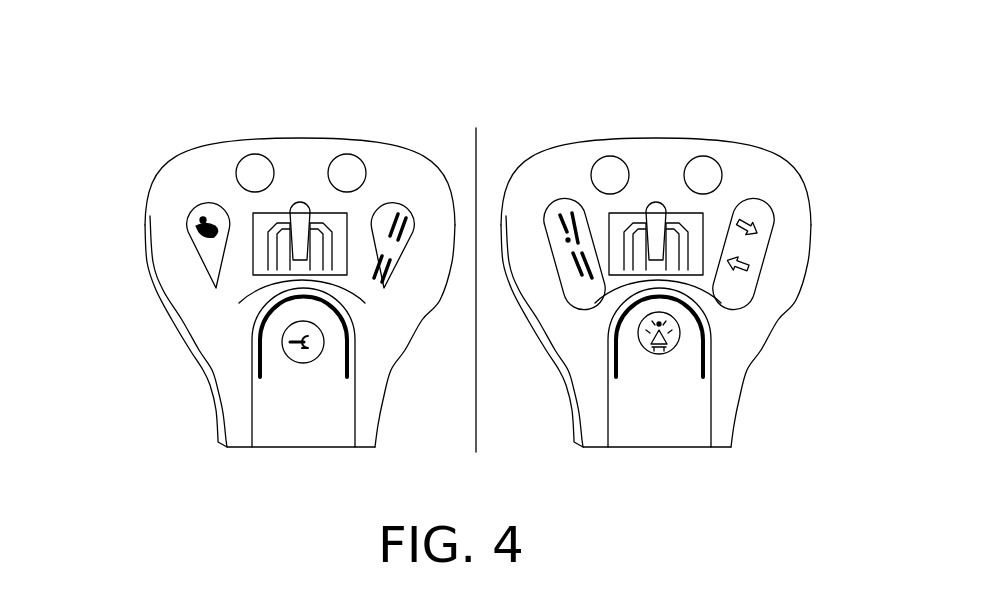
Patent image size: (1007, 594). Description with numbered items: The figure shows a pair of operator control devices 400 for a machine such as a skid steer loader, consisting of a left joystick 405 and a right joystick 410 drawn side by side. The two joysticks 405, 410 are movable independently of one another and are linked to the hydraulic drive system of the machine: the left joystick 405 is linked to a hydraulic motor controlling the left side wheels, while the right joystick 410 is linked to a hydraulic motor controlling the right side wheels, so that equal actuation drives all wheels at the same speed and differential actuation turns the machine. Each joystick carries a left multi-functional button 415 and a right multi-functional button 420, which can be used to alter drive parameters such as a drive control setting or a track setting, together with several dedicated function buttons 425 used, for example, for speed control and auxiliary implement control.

The operator control devices 400 is at (312, 88).
The left joystick 405 is at (113, 357).
The right joystick 410 is at (852, 357).
The left multi-functional button 415 is at (637, 113).
The right multi-functional button 420 is at (718, 112).
The dedicated function buttons 425 is at (203, 224).